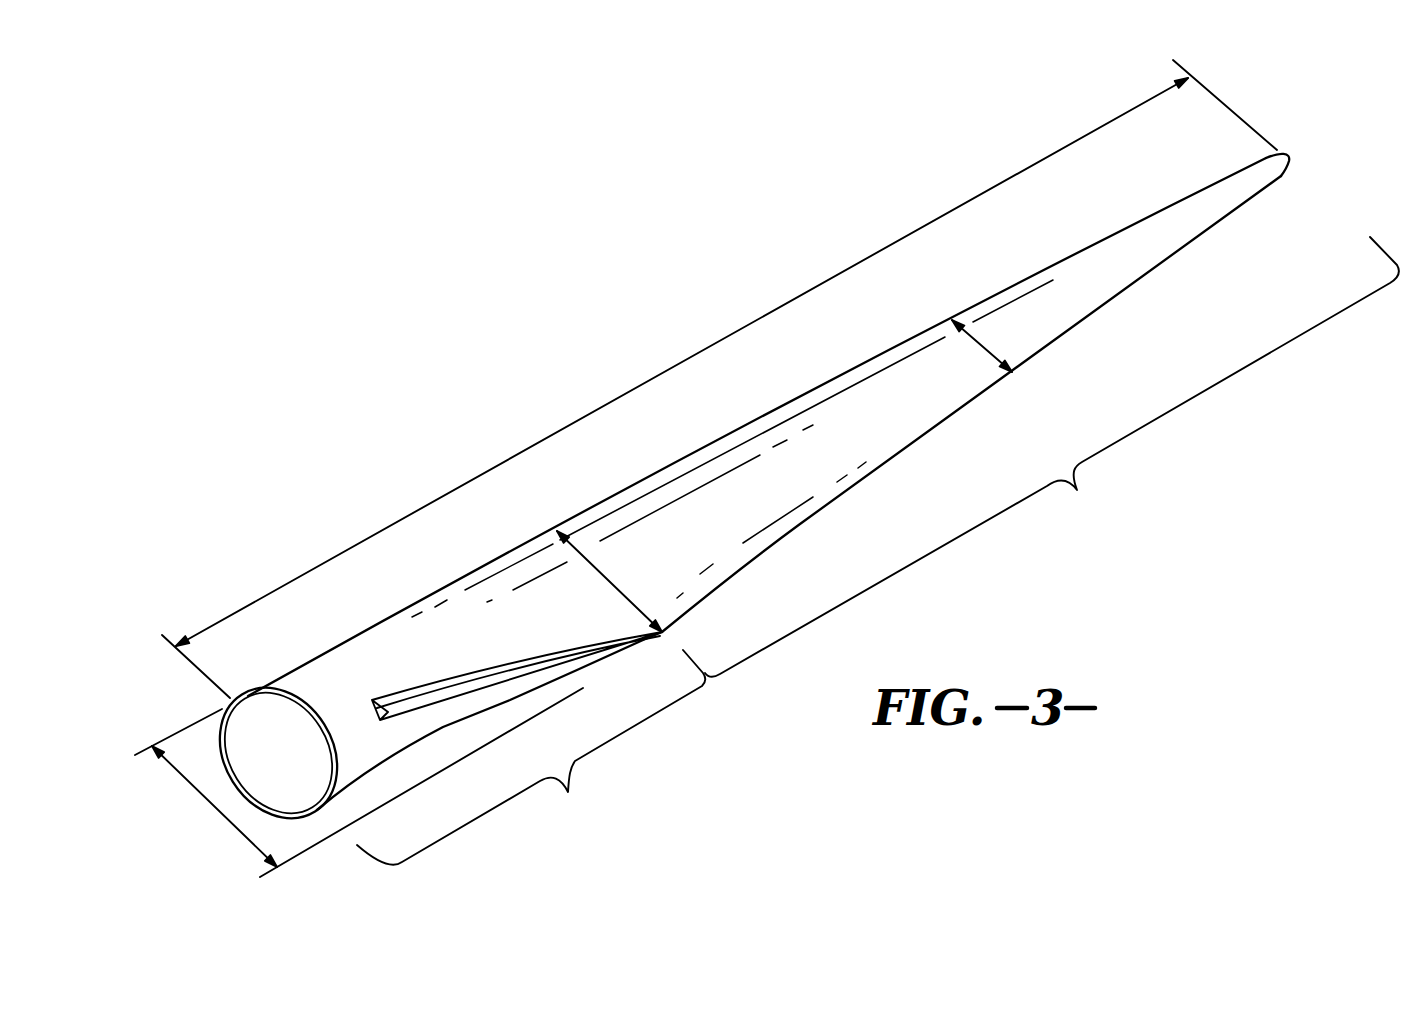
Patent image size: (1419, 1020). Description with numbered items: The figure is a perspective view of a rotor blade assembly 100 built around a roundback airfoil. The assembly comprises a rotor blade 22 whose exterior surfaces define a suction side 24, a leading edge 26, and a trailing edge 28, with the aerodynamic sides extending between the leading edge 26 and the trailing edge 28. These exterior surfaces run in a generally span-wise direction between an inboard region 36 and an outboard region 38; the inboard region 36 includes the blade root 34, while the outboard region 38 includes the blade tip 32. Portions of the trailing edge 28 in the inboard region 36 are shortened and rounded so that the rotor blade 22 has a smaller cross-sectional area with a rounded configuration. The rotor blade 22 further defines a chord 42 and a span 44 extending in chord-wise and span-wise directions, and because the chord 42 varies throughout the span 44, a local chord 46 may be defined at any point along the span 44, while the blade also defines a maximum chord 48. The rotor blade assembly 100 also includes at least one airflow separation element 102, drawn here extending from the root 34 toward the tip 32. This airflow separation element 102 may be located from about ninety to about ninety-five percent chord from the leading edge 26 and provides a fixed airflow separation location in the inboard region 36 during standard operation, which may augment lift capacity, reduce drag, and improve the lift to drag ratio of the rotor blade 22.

The rotor blade assembly 100 is at (423, 353).
The rotor blade 22 is at (1037, 266).
The suction side 24 is at (873, 425).
The leading edge 26 is at (740, 425).
The trailing edge 28 is at (800, 530).
The blade tip 32 is at (1300, 149).
The blade root 34 is at (240, 684).
The inboard region 36 is at (511, 748).
The outboard region 38 is at (1052, 457).
The chord 42 is at (210, 805).
The span 44 is at (718, 338).
The local chord 46 is at (978, 344).
The maximum chord 48 is at (607, 574).
The airflow separation element 102 is at (489, 672).